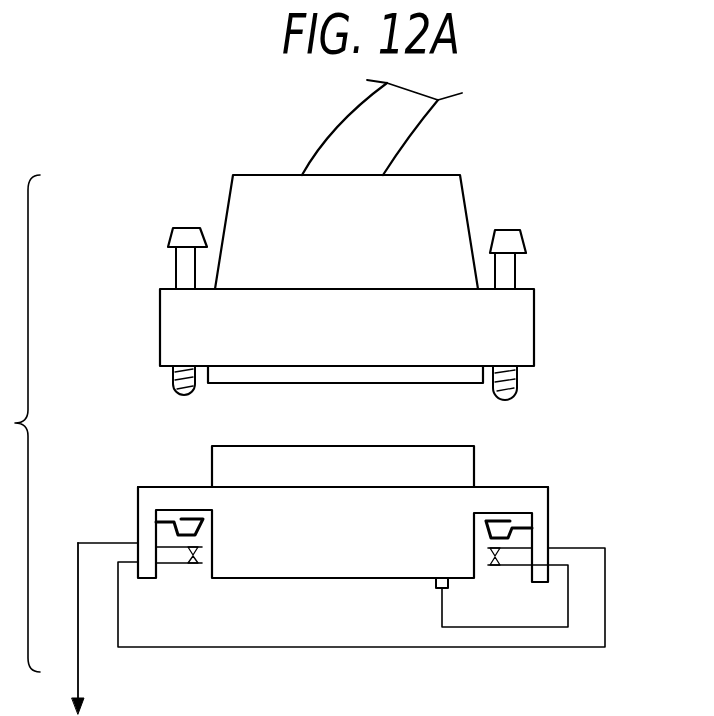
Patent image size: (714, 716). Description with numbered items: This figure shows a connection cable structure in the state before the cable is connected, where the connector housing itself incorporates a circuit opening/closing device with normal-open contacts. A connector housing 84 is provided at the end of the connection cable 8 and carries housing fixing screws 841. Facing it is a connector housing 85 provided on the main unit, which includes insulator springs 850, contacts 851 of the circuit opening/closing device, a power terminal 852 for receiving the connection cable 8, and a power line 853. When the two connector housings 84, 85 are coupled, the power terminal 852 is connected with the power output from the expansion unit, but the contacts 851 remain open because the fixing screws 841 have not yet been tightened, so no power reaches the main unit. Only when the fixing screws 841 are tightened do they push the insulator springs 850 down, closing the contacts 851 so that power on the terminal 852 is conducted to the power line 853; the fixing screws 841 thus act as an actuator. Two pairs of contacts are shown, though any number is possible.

The connection cable 8 is at (388, 135).
The connector housing 84 is at (445, 215).
The housing fixing screws 841 is at (185, 233).
The connector housing 85 is at (545, 502).
The insulator springs 850 is at (188, 525).
The contacts 851 is at (170, 548).
The power terminal 852 is at (437, 590).
The power line 853 is at (80, 678).